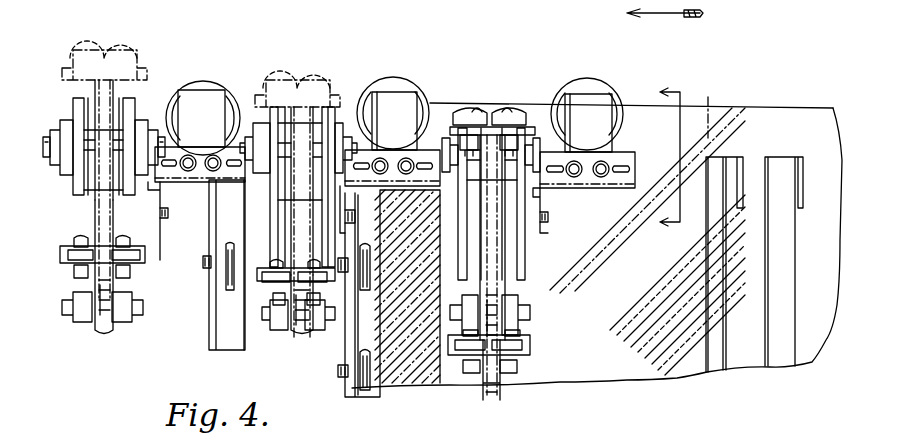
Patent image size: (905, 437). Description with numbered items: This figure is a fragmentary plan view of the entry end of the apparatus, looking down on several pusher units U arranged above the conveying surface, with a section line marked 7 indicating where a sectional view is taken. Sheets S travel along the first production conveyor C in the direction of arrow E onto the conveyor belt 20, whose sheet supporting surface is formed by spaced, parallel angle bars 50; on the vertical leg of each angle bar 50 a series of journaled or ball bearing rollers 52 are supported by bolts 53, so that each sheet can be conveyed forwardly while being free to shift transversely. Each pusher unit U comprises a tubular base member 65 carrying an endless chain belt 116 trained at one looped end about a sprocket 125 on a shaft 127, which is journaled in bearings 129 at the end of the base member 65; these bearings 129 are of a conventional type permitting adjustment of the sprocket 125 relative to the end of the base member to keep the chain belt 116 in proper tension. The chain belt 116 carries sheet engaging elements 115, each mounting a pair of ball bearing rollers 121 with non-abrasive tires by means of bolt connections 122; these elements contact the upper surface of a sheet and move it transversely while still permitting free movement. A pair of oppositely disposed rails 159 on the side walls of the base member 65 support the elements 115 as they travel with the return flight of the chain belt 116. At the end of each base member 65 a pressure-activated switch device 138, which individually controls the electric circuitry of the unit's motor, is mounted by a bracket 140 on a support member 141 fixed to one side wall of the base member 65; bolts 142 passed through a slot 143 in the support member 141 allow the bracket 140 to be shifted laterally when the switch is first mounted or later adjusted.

The conveyor belt 20 is at (205, 341).
The angle bar 50 is at (217, 318).
The roller 52 is at (230, 288).
The bolt 53 is at (204, 260).
The base member 65 is at (93, 330).
The sheet engaging element 115 is at (72, 232).
The chain belt 116 is at (108, 318).
The ball bearing roller 121 is at (72, 262).
The bolt connection 122 is at (520, 333).
The sprocket 125 is at (90, 143).
The shaft 127 is at (54, 158).
The bearing 129 is at (334, 150).
The pressure-activated switch device 138 is at (176, 96).
The bracket 140 is at (199, 170).
The support member 141 is at (168, 155).
The bolt 142 is at (213, 156).
The slot 143 is at (170, 167).
The rail 159 is at (78, 322).
The pusher unit U is at (100, 348).
The production conveyor C is at (782, 352).
The direction of movement E is at (648, 16).
The sheet S is at (707, 107).
The section line 7 is at (676, 83).